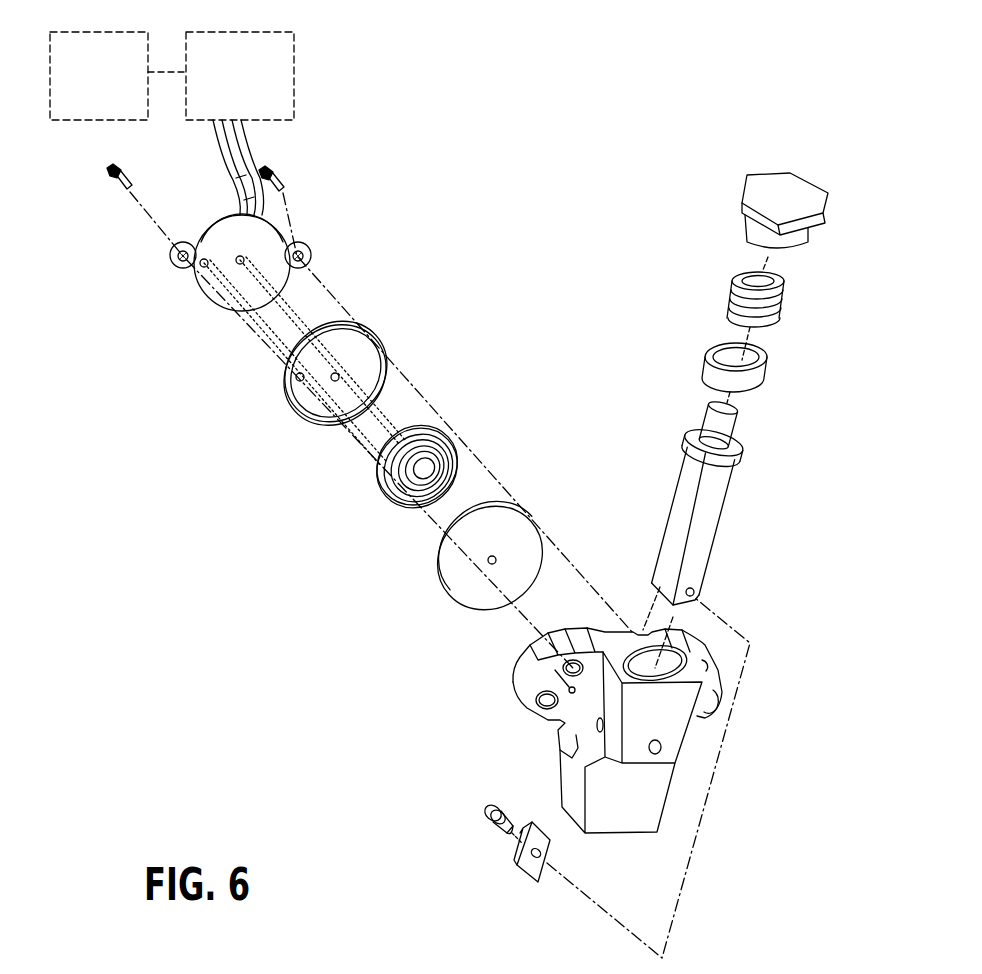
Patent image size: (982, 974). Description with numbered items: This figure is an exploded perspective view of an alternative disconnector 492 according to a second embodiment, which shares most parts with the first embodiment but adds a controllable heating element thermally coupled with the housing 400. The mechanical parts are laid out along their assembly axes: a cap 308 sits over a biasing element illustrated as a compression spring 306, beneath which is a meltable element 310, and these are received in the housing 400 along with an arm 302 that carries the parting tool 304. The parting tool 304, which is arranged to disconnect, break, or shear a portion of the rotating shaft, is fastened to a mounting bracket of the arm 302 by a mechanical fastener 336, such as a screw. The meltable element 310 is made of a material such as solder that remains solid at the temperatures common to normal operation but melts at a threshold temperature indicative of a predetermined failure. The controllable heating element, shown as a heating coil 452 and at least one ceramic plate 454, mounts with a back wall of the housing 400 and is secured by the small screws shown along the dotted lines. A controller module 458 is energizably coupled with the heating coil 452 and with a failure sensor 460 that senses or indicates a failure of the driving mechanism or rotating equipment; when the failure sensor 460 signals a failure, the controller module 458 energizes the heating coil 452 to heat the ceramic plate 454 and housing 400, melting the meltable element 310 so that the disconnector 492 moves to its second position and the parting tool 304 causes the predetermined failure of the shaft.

The disconnector 492 is at (556, 63).
The failure sensor 460 is at (104, 114).
The controller module 458 is at (246, 114).
The ceramic plate 454 is at (305, 406).
The heating coil 452 is at (385, 500).
The cap 308 is at (762, 192).
The compression spring 306 is at (737, 295).
The meltable element 310 is at (712, 360).
The arm 302 is at (727, 497).
The housing 400 is at (697, 737).
The mechanical fastener 336 is at (492, 814).
The parting tool 304 is at (538, 868).